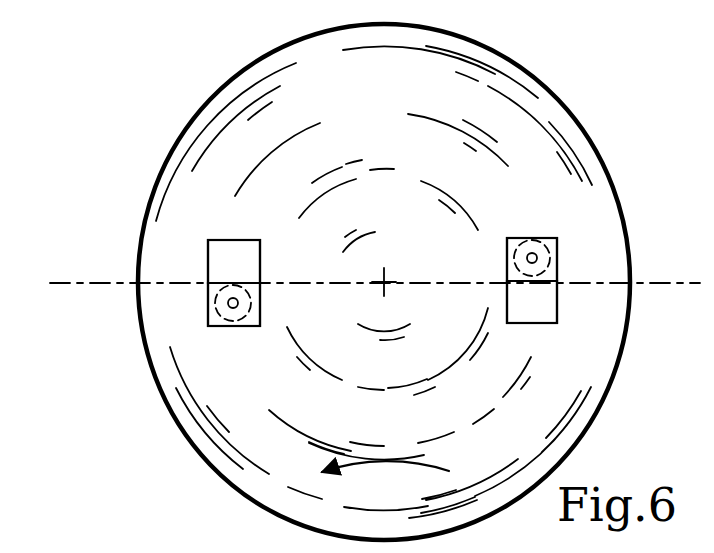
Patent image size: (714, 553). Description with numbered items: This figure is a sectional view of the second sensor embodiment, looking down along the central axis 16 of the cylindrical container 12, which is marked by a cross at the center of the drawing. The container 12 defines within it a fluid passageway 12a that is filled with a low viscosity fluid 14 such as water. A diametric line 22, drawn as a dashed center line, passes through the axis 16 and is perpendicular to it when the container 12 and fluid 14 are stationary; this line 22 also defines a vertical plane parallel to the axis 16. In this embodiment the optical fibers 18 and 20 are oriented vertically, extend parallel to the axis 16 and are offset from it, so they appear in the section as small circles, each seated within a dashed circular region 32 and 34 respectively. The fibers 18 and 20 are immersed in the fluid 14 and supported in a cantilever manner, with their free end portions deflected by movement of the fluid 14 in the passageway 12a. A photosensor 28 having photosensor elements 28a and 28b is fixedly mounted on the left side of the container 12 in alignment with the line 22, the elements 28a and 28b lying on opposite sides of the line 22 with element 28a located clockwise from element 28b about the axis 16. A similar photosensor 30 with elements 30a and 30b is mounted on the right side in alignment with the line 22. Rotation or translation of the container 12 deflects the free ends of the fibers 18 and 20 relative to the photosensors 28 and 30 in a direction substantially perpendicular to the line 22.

The cylindrical container 12 is at (226, 84).
The fluid passageway 12a is at (507, 120).
The low viscosity fluid 14 is at (397, 144).
The central axis 16 is at (383, 278).
The optical fiber 18 is at (233, 308).
The optical fiber 20 is at (532, 253).
The diametric line 22 is at (63, 282).
The photosensor 28 is at (188, 258).
The photosensor element 28a is at (218, 244).
The photosensor element 28b is at (208, 321).
The photosensor 30 is at (578, 316).
The photosensor element 30a is at (545, 318).
The photosensor element 30b is at (557, 242).
The first pivot bore 32 is at (255, 296).
The second pivot bore 34 is at (508, 249).